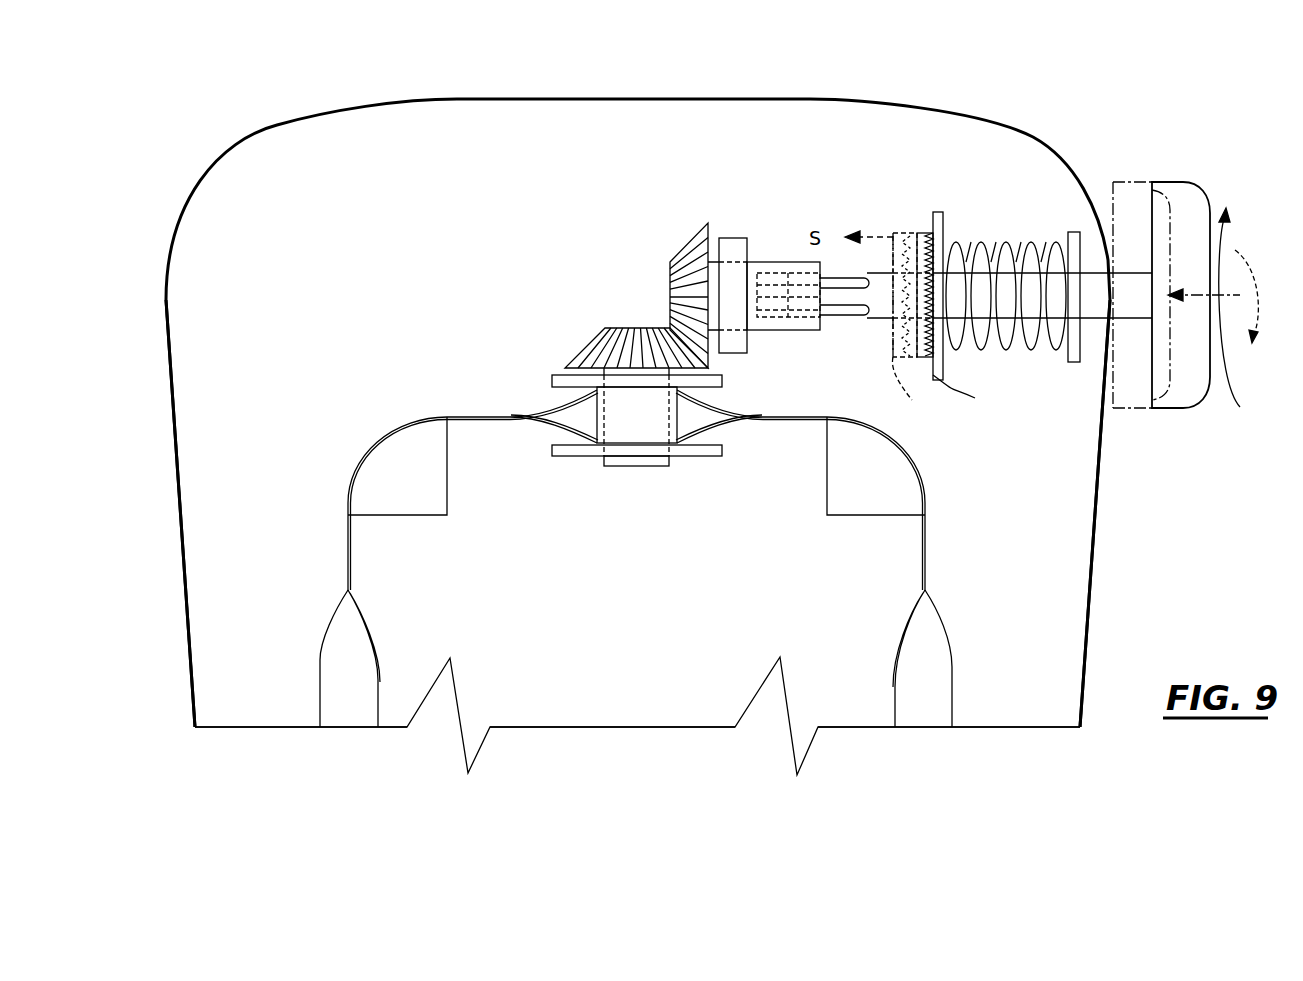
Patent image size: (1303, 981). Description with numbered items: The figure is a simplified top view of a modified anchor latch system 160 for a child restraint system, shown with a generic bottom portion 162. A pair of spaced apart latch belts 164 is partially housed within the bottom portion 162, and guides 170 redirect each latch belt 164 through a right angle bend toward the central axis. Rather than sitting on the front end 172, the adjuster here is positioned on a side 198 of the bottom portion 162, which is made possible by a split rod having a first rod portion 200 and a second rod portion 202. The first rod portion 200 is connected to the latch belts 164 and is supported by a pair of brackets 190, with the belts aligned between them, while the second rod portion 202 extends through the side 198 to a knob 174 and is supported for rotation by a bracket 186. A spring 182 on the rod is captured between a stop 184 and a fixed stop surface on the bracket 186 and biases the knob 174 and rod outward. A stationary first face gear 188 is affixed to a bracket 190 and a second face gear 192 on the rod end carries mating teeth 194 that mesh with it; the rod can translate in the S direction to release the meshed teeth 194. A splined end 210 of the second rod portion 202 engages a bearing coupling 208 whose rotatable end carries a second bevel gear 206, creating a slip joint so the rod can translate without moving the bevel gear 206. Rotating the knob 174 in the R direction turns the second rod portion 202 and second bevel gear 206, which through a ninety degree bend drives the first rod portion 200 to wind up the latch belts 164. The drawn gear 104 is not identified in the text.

The driven bevel gear 104 is at (619, 340).
The anchor latch system 160 is at (452, 378).
The bottom portion 162 is at (1038, 729).
The latch belts 164 is at (355, 655).
The guides 170 is at (427, 487).
The front end 172 is at (743, 99).
The knob 174 is at (1185, 202).
The spring 182 is at (960, 250).
The stop 184 is at (1073, 234).
The bracket 186 is at (938, 212).
The first face gear 188 is at (923, 250).
The brackets 190 is at (556, 377).
The second face gear 192 is at (946, 395).
The teeth 194 is at (917, 236).
The side 198 is at (170, 474).
The first rod portion 200 is at (640, 465).
The second rod portion 202 is at (1093, 310).
The second bevel gear 206 is at (692, 253).
The bearing coupling 208 is at (735, 248).
The splined end 210 is at (855, 312).